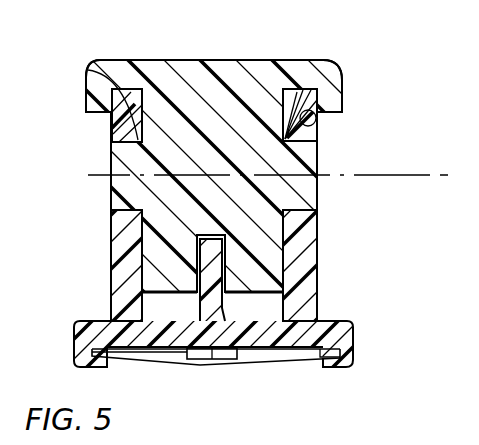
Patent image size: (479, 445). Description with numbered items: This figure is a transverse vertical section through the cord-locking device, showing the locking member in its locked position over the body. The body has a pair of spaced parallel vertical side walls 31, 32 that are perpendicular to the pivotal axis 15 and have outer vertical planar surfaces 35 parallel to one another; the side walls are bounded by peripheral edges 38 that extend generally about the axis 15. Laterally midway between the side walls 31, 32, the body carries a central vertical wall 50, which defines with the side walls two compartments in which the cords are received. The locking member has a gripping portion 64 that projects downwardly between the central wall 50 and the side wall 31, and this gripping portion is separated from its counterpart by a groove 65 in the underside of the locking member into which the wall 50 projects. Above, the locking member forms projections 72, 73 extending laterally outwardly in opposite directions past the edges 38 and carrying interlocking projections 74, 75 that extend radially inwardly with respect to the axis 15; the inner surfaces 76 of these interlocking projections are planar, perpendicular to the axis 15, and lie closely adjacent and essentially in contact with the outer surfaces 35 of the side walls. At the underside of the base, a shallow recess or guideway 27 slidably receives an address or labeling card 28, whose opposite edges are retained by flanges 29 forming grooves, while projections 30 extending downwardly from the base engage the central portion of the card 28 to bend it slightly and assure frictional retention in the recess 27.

The pivotal axis 15 is at (404, 174).
The recess or guideway 27 is at (168, 353).
The address or labeling card 28 is at (280, 365).
The flanges 29 is at (337, 367).
The projections 30 is at (210, 358).
The side wall 31 is at (118, 233).
The side wall 32 is at (315, 290).
The outer vertical planar surfaces 35 is at (118, 133).
The peripheral edges 38 is at (305, 90).
The vertical wall 50 is at (207, 238).
The gripping portion 64 is at (147, 275).
The groove 65 is at (222, 256).
The projection 72 is at (305, 59).
The projection 73 is at (126, 72).
The interlocking projection 74 is at (88, 102).
The interlocking projection 75 is at (337, 105).
The inner surfaces 76 is at (88, 72).